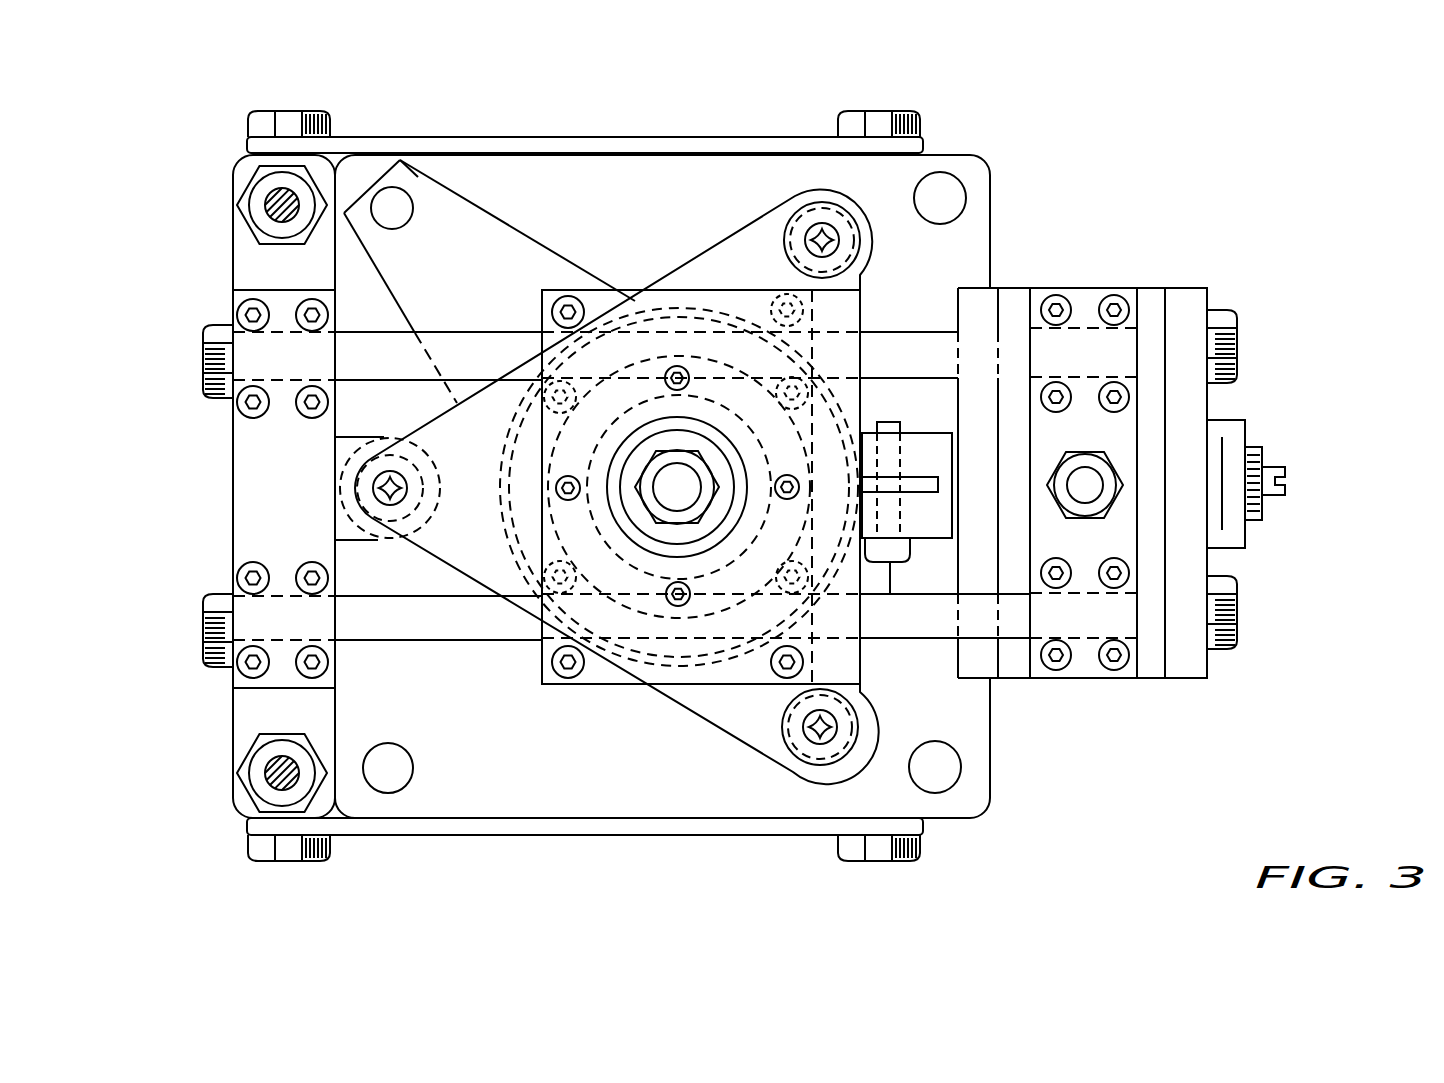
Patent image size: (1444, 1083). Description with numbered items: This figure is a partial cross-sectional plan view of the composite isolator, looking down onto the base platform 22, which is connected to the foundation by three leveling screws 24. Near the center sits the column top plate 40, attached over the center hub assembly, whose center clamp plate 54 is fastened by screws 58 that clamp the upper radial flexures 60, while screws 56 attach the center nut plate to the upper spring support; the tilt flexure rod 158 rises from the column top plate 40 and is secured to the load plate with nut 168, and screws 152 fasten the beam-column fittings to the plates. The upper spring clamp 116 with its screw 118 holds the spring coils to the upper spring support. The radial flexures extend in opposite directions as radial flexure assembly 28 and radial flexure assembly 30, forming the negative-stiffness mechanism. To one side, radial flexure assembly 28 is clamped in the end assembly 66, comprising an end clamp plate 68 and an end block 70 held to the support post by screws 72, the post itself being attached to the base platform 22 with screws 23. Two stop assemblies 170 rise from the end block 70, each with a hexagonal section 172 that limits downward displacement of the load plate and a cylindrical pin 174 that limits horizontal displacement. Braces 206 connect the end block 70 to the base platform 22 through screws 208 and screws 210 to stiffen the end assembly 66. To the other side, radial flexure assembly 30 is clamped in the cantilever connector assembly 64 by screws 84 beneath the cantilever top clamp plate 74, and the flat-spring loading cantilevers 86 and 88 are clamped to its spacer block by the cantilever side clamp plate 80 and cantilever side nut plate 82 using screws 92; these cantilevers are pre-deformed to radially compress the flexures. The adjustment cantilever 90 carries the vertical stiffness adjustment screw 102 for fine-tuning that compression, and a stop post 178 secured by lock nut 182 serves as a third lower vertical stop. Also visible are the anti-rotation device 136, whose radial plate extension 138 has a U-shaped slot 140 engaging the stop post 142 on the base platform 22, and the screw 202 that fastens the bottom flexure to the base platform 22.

The base platform 22 is at (745, 818).
The screws 23 is at (205, 350).
The leveling screws 24 is at (948, 178).
The radial flexure assembly 28 is at (420, 662).
The radial flexure assembly 30 is at (924, 665).
The column top plate 40 is at (758, 738).
The center clamp plate 54 is at (592, 684).
The screws 56 is at (675, 366).
The screws 58 is at (552, 312).
The upper radial flexures 60 is at (380, 335).
The cantilever connector assembly 64 is at (1183, 250).
The end assembly 66 is at (205, 567).
The end clamp plate 68 is at (245, 528).
The end block 70 is at (245, 712).
The screws 72 is at (285, 270).
The cantilever top clamp plate 74 is at (1128, 425).
The cantilever side clamp plate 80 is at (1180, 288).
The cantilever side nut plate 82 is at (965, 288).
The screws 84 is at (1114, 295).
The loading cantilever 86 is at (1015, 288).
The loading cantilever 88 is at (1155, 680).
The adjustment cantilever 90 is at (1240, 530).
The screws 92 is at (1238, 345).
The vertical stiffness adjustment screw 102 is at (1287, 478).
The upper spring clamp 116 is at (938, 430).
The screw 118 is at (891, 595).
The anti-rotation device 136 is at (553, 180).
The radial plate extension 138 is at (458, 212).
The U-shaped slot 140 is at (412, 177).
The stop post 142 is at (378, 196).
The screws 152 is at (822, 222).
The tilt flexure rod 158 is at (693, 455).
The nut 168 is at (679, 485).
The stop assembly 170 is at (220, 200).
The hexagonal section 172 is at (243, 240).
The cylindrical pin 174 is at (243, 197).
The stop post 178 is at (1098, 490).
The lock nut 182 is at (1113, 463).
The screw 202 is at (386, 792).
The braces 206 is at (663, 137).
The screws 208 is at (295, 111).
The screws 210 is at (900, 111).